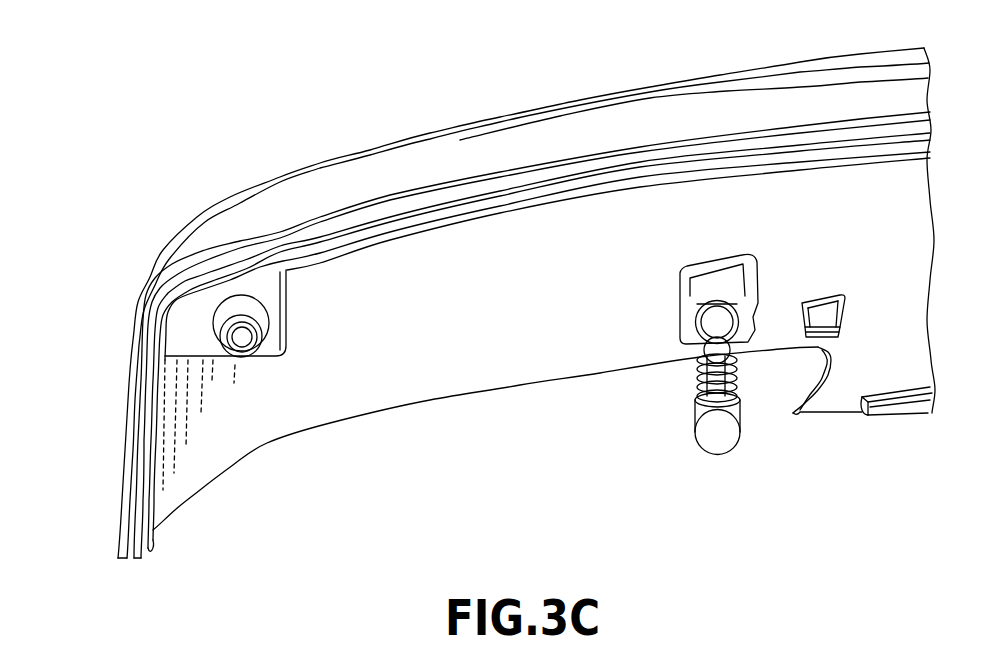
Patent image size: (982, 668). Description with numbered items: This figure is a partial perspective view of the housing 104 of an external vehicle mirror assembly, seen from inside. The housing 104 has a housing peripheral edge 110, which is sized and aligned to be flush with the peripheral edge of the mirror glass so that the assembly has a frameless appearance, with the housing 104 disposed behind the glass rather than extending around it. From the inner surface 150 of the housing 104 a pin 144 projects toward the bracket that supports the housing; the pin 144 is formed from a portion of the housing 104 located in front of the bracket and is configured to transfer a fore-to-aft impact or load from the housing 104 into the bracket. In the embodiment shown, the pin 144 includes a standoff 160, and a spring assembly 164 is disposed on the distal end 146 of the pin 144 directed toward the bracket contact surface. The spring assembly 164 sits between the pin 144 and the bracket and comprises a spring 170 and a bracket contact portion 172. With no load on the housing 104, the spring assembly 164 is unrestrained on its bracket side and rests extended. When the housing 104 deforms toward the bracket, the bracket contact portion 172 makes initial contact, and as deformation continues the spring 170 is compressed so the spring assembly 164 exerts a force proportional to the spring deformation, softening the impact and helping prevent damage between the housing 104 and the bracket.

The housing 104 is at (580, 133).
The housing peripheral edge 110 is at (137, 430).
The pin 144 is at (708, 328).
The distal end 146 is at (718, 346).
The inner surface 150 is at (448, 372).
The standoff 160 is at (653, 427).
The spring assembly 164 is at (755, 383).
The spring 170 is at (695, 387).
The bracket contact portion 172 is at (718, 423).